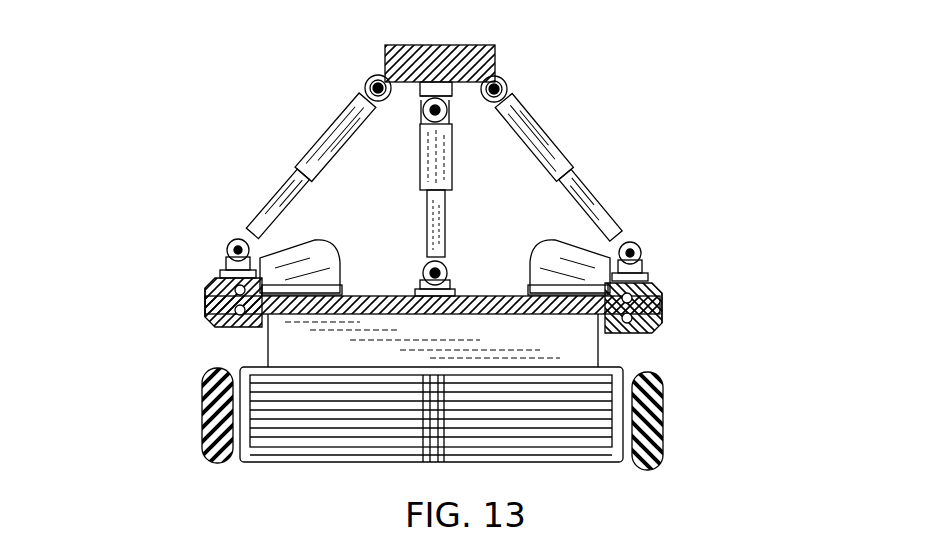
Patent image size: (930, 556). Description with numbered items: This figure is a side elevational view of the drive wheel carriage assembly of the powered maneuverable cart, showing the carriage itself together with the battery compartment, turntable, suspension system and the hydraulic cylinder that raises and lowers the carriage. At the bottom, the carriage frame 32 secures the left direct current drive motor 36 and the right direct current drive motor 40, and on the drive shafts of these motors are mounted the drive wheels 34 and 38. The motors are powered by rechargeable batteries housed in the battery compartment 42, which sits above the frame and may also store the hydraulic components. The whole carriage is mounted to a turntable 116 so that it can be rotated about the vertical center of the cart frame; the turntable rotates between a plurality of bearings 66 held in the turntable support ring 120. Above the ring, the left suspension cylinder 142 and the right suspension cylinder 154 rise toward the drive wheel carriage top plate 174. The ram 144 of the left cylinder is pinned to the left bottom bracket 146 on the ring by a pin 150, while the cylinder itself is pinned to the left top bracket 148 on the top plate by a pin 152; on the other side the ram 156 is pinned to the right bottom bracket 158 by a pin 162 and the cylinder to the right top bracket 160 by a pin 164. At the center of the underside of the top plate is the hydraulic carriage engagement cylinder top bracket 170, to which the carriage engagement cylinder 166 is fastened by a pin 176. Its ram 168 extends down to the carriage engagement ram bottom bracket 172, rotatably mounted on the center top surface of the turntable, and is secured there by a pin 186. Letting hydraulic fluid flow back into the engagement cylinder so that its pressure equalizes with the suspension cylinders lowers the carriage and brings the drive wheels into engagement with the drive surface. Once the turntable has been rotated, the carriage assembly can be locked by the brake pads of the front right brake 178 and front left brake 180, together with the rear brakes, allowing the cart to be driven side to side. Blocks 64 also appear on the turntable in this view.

The frame 32 is at (435, 456).
The drive wheel 34 is at (205, 410).
The left direct current drive motor 36 is at (362, 405).
The drive wheel 38 is at (665, 428).
The right direct current drive motor 40 is at (545, 410).
The battery compartment 42 is at (293, 343).
The support block 64 is at (340, 248).
The bearings 66 is at (216, 280).
The turntable 116 is at (545, 316).
The turntable support ring 120 is at (212, 320).
The left suspension cylinder 142 is at (352, 110).
The ram 144 is at (293, 170).
The left bottom bracket 146 is at (240, 240).
The left top bracket 148 is at (375, 75).
The pin 150 is at (232, 262).
The pin 152 is at (366, 84).
The right suspension cylinder 154 is at (572, 150).
The ram 156 is at (602, 208).
The right bottom bracket 158 is at (643, 248).
The right top bracket 160 is at (504, 78).
The pin 162 is at (648, 266).
The pin 164 is at (514, 88).
The carriage engagement cylinder 166 is at (420, 170).
The ram 168 is at (530, 128).
The hydraulic carriage engagement cylinder top bracket 170 is at (449, 100).
The carriage engagement ram bottom bracket 172 is at (413, 287).
The drive wheel carriage top plate 174 is at (448, 52).
The pin 176 is at (407, 127).
The front right brake 178 is at (522, 255).
The front left brake 180 is at (291, 250).
The pin 186 is at (450, 278).